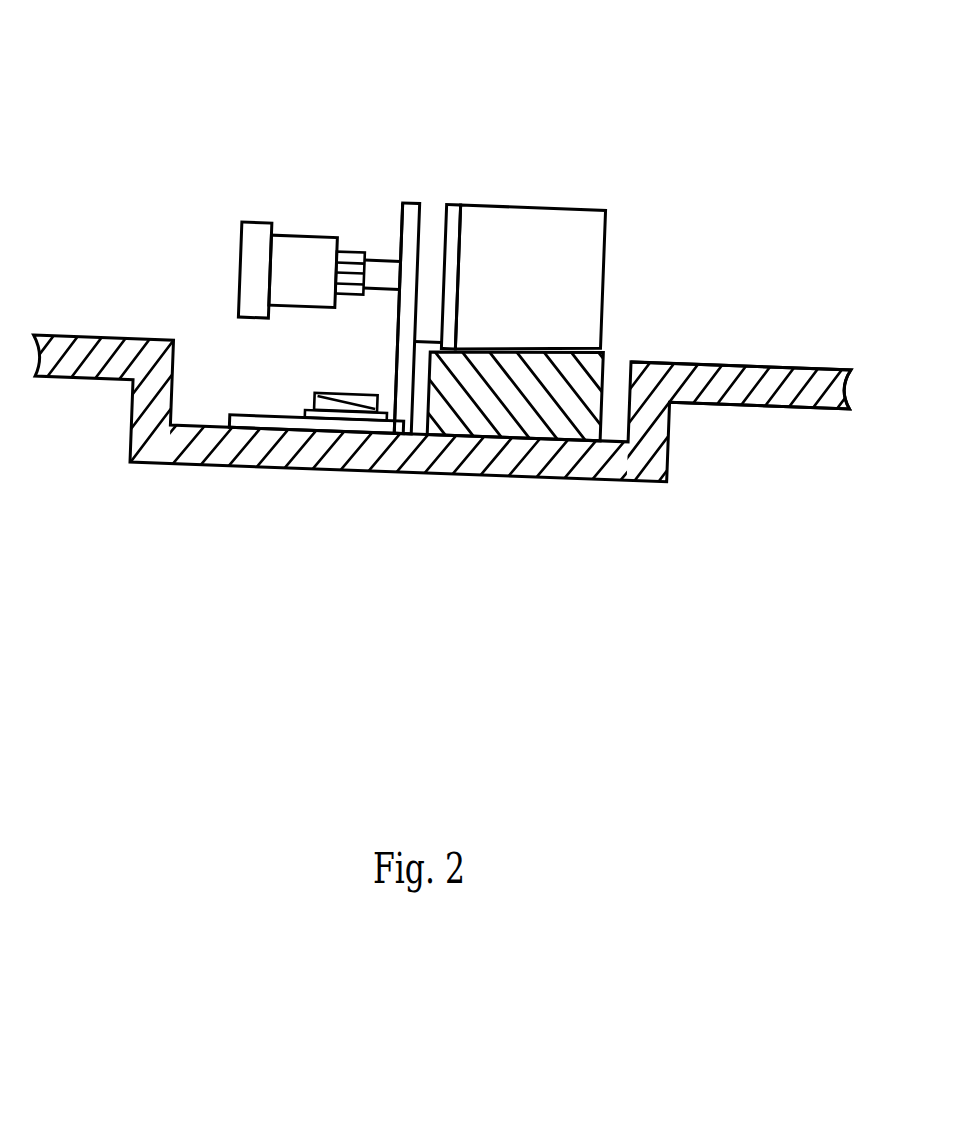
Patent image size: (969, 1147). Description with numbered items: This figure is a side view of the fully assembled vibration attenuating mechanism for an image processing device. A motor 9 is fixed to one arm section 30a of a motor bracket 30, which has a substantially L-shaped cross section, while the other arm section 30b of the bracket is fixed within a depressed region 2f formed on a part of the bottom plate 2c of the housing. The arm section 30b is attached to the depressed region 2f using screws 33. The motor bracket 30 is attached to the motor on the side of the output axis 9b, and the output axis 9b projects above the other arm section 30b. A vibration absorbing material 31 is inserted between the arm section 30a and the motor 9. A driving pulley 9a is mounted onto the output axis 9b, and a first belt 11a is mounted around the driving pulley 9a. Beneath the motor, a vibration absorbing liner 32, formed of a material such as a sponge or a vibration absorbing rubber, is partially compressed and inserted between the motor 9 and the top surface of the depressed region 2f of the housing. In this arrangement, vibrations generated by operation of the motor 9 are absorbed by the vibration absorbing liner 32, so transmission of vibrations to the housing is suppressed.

The bottom plate 2c is at (777, 385).
The depressed region 2f is at (187, 417).
The motor 9 is at (578, 240).
The driving pulley 9a is at (352, 297).
The output axis 9b is at (373, 268).
The first belt 11a is at (278, 250).
The motor bracket 30 is at (413, 213).
The arm section 30a is at (405, 253).
The arm section 30b is at (250, 420).
The vibration absorbing material 31 is at (433, 217).
The vibration absorbing liner 32 is at (537, 413).
The screws 33 is at (348, 400).